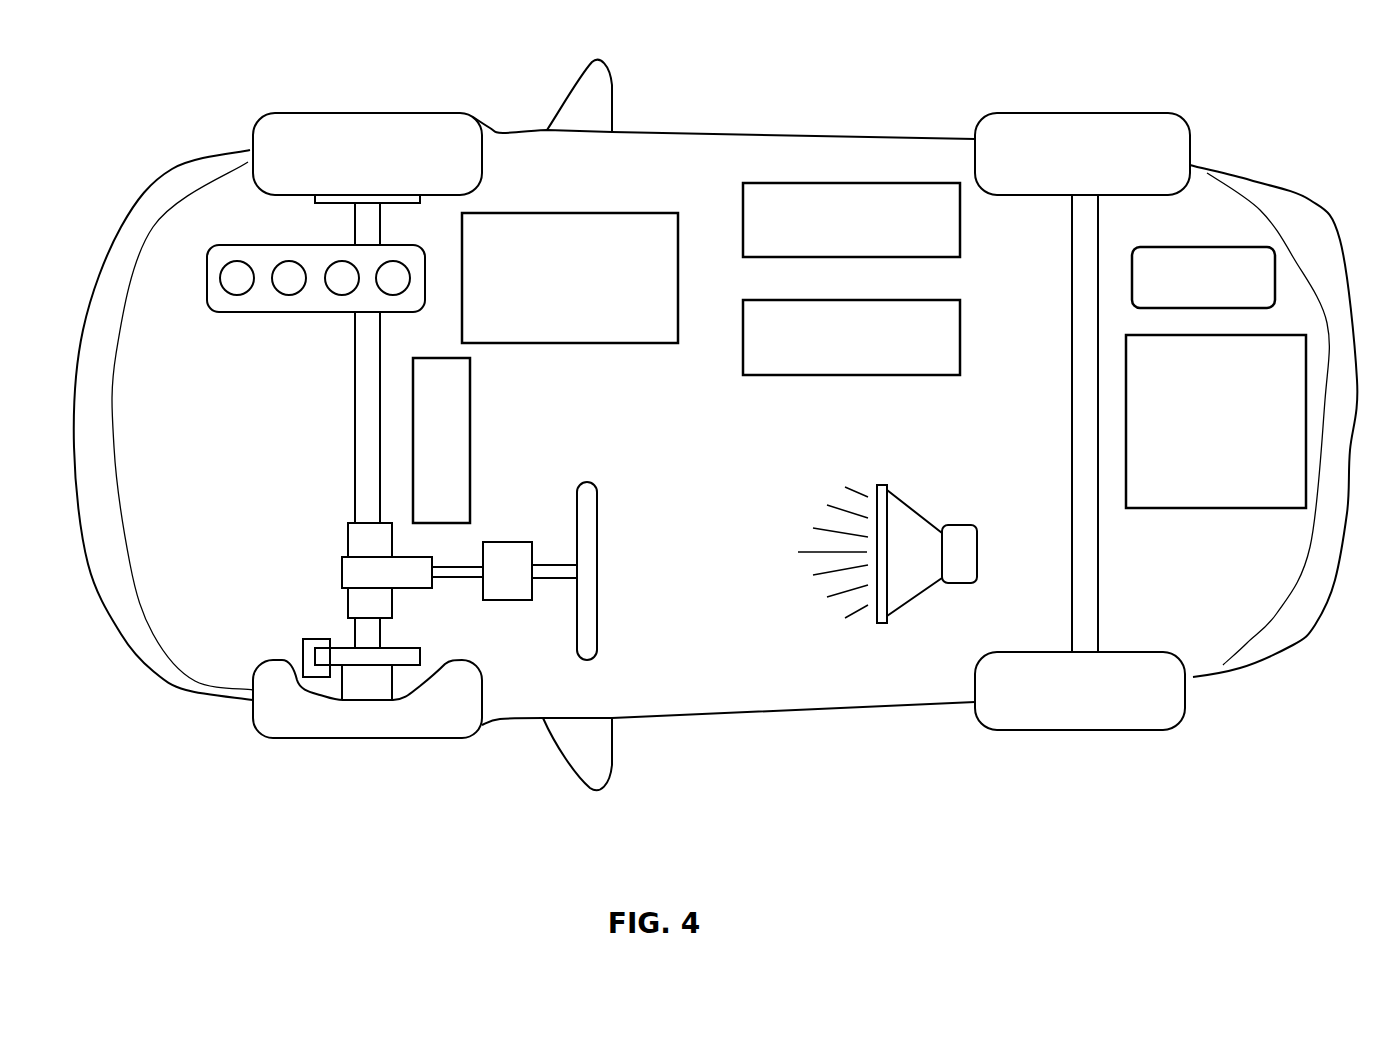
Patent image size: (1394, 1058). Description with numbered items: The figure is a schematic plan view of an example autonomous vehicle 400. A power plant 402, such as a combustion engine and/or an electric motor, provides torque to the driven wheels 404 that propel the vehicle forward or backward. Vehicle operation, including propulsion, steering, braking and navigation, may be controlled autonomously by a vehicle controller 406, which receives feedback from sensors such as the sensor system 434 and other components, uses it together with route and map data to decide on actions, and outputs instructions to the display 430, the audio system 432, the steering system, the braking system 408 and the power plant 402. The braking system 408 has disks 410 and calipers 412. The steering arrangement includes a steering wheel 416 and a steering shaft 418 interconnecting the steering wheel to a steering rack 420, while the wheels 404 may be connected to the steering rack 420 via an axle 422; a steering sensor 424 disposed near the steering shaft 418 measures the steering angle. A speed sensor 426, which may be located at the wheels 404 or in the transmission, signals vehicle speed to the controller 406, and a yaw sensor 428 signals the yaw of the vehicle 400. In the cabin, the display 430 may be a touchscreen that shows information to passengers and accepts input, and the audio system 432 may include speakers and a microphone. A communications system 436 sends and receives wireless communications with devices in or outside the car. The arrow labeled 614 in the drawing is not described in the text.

The autonomous vehicle 400 is at (880, 85).
The power plant 402 is at (262, 298).
The driven wheels 404 is at (298, 130).
The vehicle controller 406 is at (570, 278).
The braking system 408 is at (258, 625).
The disks 410 is at (345, 647).
The calipers 412 is at (303, 655).
The steering wheel 416 is at (597, 617).
The steering shaft 418 is at (548, 577).
The steering rack 420 is at (517, 542).
The axle 422 is at (380, 227).
The steering sensor 424 is at (348, 540).
The speed sensor 426 is at (758, 183).
The yaw sensor 428 is at (760, 375).
The display 430 is at (470, 388).
The audio system 432 is at (900, 530).
The sensor system 434 is at (1216, 421).
The communications system 436 is at (1277, 280).
The input device 614 is at (495, 495).